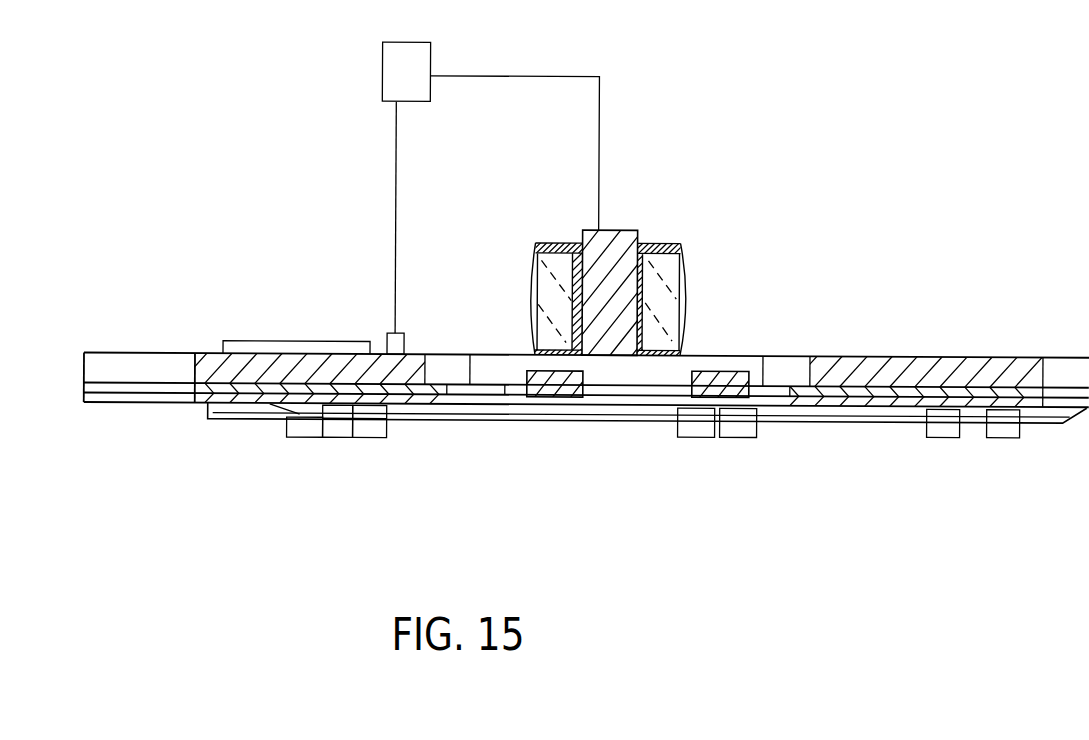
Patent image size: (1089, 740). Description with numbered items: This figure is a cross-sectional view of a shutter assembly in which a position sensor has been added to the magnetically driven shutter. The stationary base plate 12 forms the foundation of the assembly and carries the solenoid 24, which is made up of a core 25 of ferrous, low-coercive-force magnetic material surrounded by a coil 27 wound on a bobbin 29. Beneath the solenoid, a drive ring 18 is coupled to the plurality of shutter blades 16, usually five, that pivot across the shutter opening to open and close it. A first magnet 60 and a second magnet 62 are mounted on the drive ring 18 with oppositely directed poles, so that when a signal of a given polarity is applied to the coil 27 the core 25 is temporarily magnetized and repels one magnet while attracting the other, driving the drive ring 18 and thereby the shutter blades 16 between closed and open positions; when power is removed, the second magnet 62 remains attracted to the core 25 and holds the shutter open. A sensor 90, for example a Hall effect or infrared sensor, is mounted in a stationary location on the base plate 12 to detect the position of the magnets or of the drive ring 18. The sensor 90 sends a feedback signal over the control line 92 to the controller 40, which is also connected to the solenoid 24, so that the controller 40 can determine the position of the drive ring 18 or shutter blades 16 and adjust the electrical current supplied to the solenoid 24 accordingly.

The base plate 12 is at (948, 353).
The shutter blades 16 is at (547, 398).
The drive ring 18 is at (198, 402).
The solenoid 24 is at (515, 260).
The core 25 is at (603, 226).
The coil 27 is at (688, 290).
The bobbin 29 is at (668, 242).
The controller 40 is at (417, 82).
The first magnet 60 is at (528, 353).
The second magnet 62 is at (735, 353).
The sensor 90 is at (387, 338).
The control line 92 is at (395, 202).